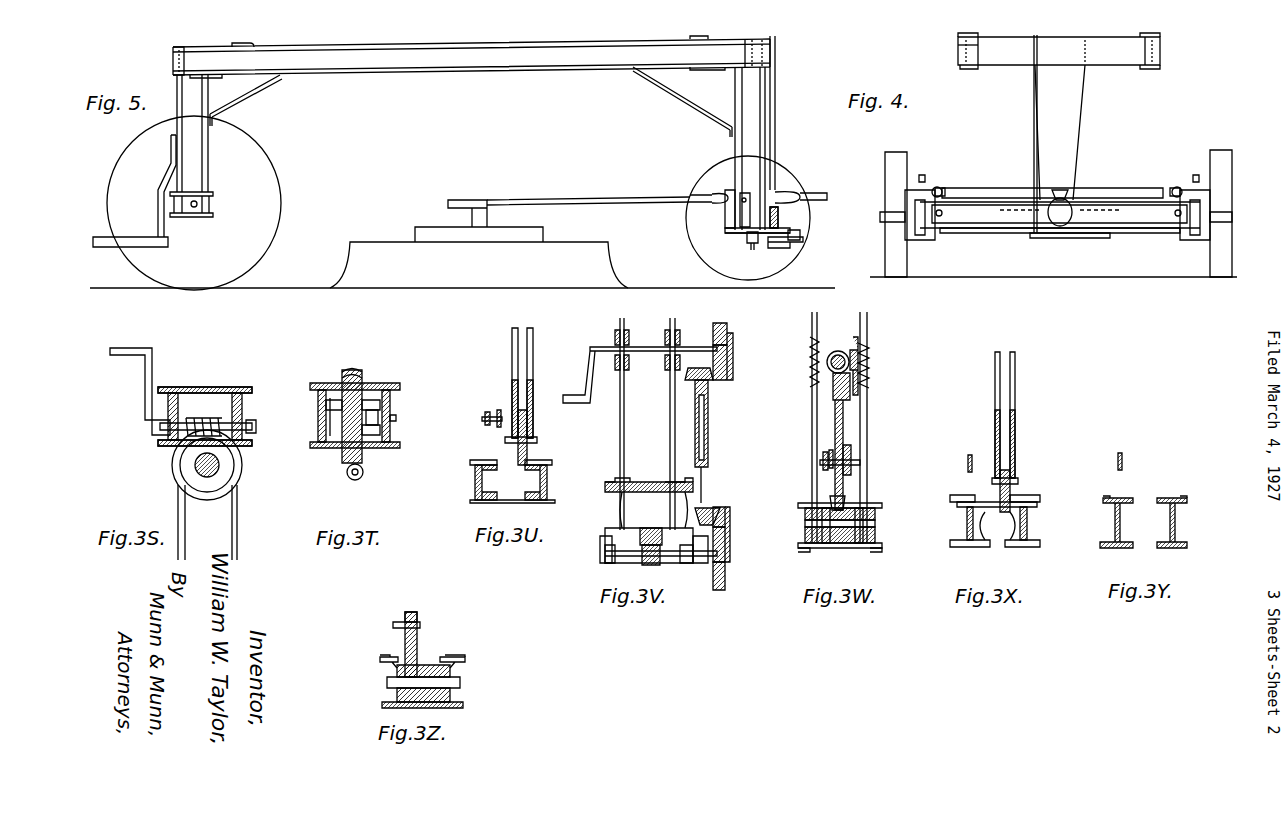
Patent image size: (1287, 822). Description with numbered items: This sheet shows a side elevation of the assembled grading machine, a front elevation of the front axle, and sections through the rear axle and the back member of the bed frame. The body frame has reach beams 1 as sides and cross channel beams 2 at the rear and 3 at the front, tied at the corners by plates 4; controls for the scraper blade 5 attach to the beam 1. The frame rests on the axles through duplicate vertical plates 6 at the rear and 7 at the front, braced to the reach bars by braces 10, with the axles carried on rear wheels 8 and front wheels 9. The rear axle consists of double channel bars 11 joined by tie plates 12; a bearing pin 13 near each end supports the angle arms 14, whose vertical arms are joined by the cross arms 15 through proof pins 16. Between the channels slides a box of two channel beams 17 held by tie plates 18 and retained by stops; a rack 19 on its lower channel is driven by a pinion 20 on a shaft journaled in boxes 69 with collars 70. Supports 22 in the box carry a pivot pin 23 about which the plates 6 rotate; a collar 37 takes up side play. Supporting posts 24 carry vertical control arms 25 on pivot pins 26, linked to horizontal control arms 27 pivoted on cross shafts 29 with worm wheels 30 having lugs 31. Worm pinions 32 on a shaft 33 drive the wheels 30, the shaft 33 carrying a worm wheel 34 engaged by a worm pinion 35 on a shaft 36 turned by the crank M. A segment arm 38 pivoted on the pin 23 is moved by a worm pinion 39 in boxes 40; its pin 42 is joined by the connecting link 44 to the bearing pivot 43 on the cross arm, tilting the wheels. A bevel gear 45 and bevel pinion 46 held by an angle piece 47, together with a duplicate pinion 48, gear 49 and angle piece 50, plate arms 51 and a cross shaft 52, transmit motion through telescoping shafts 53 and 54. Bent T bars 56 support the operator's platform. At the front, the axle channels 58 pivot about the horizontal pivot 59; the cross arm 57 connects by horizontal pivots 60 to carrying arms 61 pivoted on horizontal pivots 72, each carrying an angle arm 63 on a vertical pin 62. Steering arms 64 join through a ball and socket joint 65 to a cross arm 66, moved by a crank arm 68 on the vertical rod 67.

In FIG. 5, the reach beams 1 is at (480, 70).
In FIG. 4, the reach beams 1 is at (957, 52).
In FIG. 5, the cross channel beams 2 is at (172, 56).
In FIG. 3S, the cross channel beams 2 is at (170, 406).
In FIG. 3T, the cross channel beams 2 is at (318, 401).
In FIG. 5, the cross channel beams 3 is at (791, 52).
In FIG. 4, the cross channel beams 3 is at (1059, 51).
In FIG. 5, the plates 4 is at (240, 66).
In FIG. 4, the plates 4 is at (958, 35).
In FIG. 3S, the plates 4 is at (216, 387).
In FIG. 3T, the plates 4 is at (330, 449).
In FIG. 5, the scraper blade 5 is at (479, 244).
In FIG. 5, the plates 6 is at (177, 88).
In FIG. 3S, the plates 6 is at (178, 513).
In FIG. 3V, the plates 6 is at (668, 403).
In FIG. 3W, the plates 6 is at (868, 407).
In FIG. 5, the plates 7 is at (735, 100).
In FIG. 4, the plates 7 is at (1081, 106).
In FIG. 5, the rear wheels 8 is at (252, 136).
In FIG. 5, the front wheels 9 is at (790, 168).
In FIG. 4, the front wheels 9 is at (902, 152).
In FIG. 5, the braces 10 is at (252, 87).
In FIG. 5, the channel bars 11 is at (170, 204).
In FIG. 3U, the channel bars 11 is at (472, 466).
In FIG. 3V, the channel bars 11 is at (612, 492).
In FIG. 3W, the channel bars 11 is at (800, 506).
In FIG. 3X, the channel bars 11 is at (960, 508).
In FIG. 3Y, the channel bars 11 is at (1110, 510).
In FIG. 3Z, the channel bars 11 is at (380, 664).
In FIG. 5, the tie plates 12 is at (194, 192).
In FIG. 3U, the tie plates 12 is at (512, 503).
In FIG. 3Z, the tie plates 12 is at (424, 708).
In FIG. 3Z, the bearing pin 13 is at (462, 682).
In FIG. 5, the angle arms 14 is at (213, 208).
In FIG. 3Z, the angle arms 14 is at (418, 639).
In FIG. 3U, the cross arms 15 is at (485, 414).
In FIG. 3W, the cross arms 15 is at (824, 454).
In FIG. 3X, the cross arms 15 is at (970, 454).
In FIG. 3Y, the cross arms 15 is at (1122, 452).
In FIG. 3Z, the cross arms 15 is at (404, 614).
In FIG. 3Z, the proof pins 16 is at (422, 624).
In FIG. 3W, the channel beams 17 is at (863, 500).
In FIG. 3X, the channel beams 17 is at (997, 526).
In FIG. 3U, the tie plates 18 is at (488, 465).
In FIG. 3X, the tie plates 18 is at (965, 527).
In FIG. 3V, the rack 19 is at (652, 528).
In FIG. 3V, the pinion 20 is at (650, 566).
In FIG. 3W, the support 22 is at (876, 535).
In FIG. 3W, the pivot pin 23 is at (805, 523).
In FIG. 3U, the supporting posts 24 is at (528, 423).
In FIG. 3X, the supporting posts 24 is at (1016, 462).
In FIG. 3U, the control arms 25 is at (512, 372).
In FIG. 3X, the control arms 25 is at (1016, 410).
In FIG. 3U, the pivot pins 26 is at (537, 439).
In FIG. 3X, the pivot pins 26 is at (1020, 479).
In FIG. 3T, the horizontal control arms 27 is at (397, 417).
In FIG. 3T, the cross shafts 29 is at (330, 395).
In FIG. 3T, the worm wheels 30 is at (352, 374).
In FIG. 3T, the lugs 31 is at (372, 402).
In FIG. 3T, the worm pinions 32 is at (362, 478).
In FIG. 3S, the shaft 33 is at (220, 470).
In FIG. 3S, the worm wheel 34 is at (172, 459).
In FIG. 3S, the worm pinion 35 is at (210, 416).
In FIG. 3S, the shaft 36 is at (257, 426).
In FIG. 3W, the collar 37 is at (830, 500).
In FIG. 3W, the segment arm 38 is at (845, 428).
In FIG. 3W, the worm pinion 39 is at (838, 350).
In FIG. 3W, the boxes 40 is at (860, 358).
In FIG. 3W, the pin 42 is at (855, 464).
In FIG. 3U, the bearing pivot 43 is at (482, 421).
In FIG. 3W, the bearing pivot 43 is at (820, 462).
In FIG. 3U, the connecting link 44 is at (498, 410).
In FIG. 3W, the connecting link 44 is at (831, 450).
In FIG. 3V, the bevel gear 45 is at (727, 577).
In FIG. 3V, the bevel pinion 46 is at (727, 512).
In FIG. 3V, the angle piece 47 is at (731, 537).
In FIG. 3V, the pinion 48 is at (715, 385).
In FIG. 3V, the gear 49 is at (728, 339).
In FIG. 3V, the angle piece 50 is at (734, 362).
In FIG. 3V, the plate arms 51 is at (614, 330).
In FIG. 3V, the cross shaft 52 is at (646, 347).
In FIG. 3V, the shaft 53 is at (709, 426).
In FIG. 3V, the shaft 54 is at (703, 470).
In FIG. 5, the bent T bars 56 is at (171, 148).
In FIG. 4, the cross arm 57 is at (1120, 188).
In FIG. 5, the front axle channels 58 is at (722, 218).
In FIG. 4, the front axle channels 58 is at (1000, 214).
In FIG. 4, the horizontal pivot 59 is at (1062, 227).
In FIG. 4, the horizontal pivots 60 is at (943, 189).
In FIG. 5, the carrying arm 61 is at (746, 192).
In FIG. 4, the carrying arm 61 is at (940, 186).
In FIG. 5, the vertical pin 62 is at (752, 250).
In FIG. 4, the vertical pin 62 is at (921, 186).
In FIG. 5, the angle arm 63 is at (727, 212).
In FIG. 4, the angle arm 63 is at (912, 210).
In FIG. 5, the steering arm 64 is at (786, 243).
In FIG. 4, the steering arm 64 is at (912, 222).
In FIG. 5, the ball and socket joint 65 is at (803, 232).
In FIG. 4, the cross arm 66 is at (1010, 234).
In FIG. 5, the vertical rod 67 is at (776, 121).
In FIG. 4, the vertical rod 67 is at (1034, 128).
In FIG. 5, the crank arm 68 is at (800, 250).
In FIG. 4, the crank arm 68 is at (1040, 238).
In FIG. 3V, the boxes 69 is at (604, 560).
In FIG. 3V, the collars 70 is at (626, 557).
In FIG. 4, the horizontal pivots 72 is at (941, 217).
In FIG. 3S, the crank M is at (137, 391).